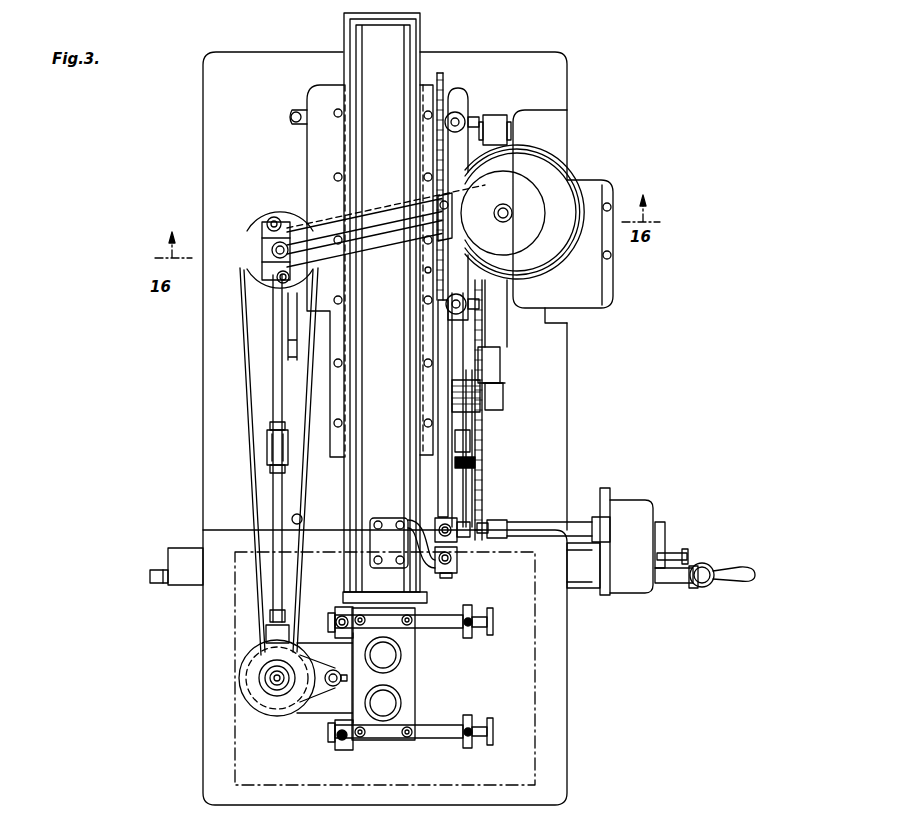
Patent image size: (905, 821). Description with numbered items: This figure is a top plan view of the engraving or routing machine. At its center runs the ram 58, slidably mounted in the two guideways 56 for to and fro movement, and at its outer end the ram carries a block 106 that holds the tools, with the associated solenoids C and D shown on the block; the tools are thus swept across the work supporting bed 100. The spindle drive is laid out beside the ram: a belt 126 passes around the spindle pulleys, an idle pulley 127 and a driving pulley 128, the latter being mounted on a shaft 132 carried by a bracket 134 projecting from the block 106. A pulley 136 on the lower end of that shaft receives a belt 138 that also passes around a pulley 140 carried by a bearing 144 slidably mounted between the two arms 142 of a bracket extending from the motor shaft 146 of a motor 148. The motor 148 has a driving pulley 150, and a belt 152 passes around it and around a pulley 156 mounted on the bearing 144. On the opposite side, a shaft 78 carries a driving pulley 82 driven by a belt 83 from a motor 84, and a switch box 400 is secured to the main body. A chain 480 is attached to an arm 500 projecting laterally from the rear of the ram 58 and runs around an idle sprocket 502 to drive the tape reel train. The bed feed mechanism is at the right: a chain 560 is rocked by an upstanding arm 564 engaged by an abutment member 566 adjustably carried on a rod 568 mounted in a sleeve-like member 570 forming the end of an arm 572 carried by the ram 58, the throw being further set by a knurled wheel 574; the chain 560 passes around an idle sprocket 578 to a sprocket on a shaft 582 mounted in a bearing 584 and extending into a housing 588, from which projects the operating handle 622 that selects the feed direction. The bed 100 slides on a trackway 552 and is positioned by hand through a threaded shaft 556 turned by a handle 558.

The guideways 56 is at (334, 98).
The ram 58 is at (382, 302).
The shaft 78 is at (504, 376).
The driving pulley 82 is at (502, 356).
The belt 83 is at (496, 115).
The motor 84 is at (585, 282).
The work supporting bed 100 is at (555, 690).
The block 106 is at (418, 683).
The belt 126 is at (300, 715).
The idle pulley 127 is at (323, 715).
The driving pulley 128 is at (277, 716).
The shaft 132 is at (262, 692).
The bracket 134 is at (322, 645).
The pulley 136 is at (240, 680).
The belt 138 is at (252, 462).
The pulley 140 is at (264, 224).
The arms 142 is at (376, 216).
The bearing 144 is at (262, 258).
The motor shaft 146 is at (494, 212).
The motor 148 is at (555, 165).
The driving pulley 150 is at (500, 186).
The belt 152 is at (404, 282).
The pulley 156 is at (288, 203).
The switch box 400 is at (500, 392).
The chain 480 is at (440, 133).
The arm 500 is at (462, 272).
The idle sprocket 502 is at (440, 73).
The trackway 552 is at (585, 590).
The threaded shaft 556 is at (165, 585).
The handle 558 is at (705, 565).
The chain 560 is at (483, 486).
The upstanding arm 564 is at (480, 420).
The abutment member 566 is at (457, 540).
The rod 568 is at (440, 438).
The sleeve-like member 570 is at (457, 566).
The arm 572 is at (380, 518).
The knurled wheel 574 is at (477, 462).
The idle sprocket 578 is at (471, 441).
The shaft 582 is at (578, 520).
The bearing 584 is at (505, 522).
The housing 588 is at (632, 500).
The operating handle 622 is at (666, 542).
The solenoid C is at (402, 657).
The solenoid D is at (402, 703).